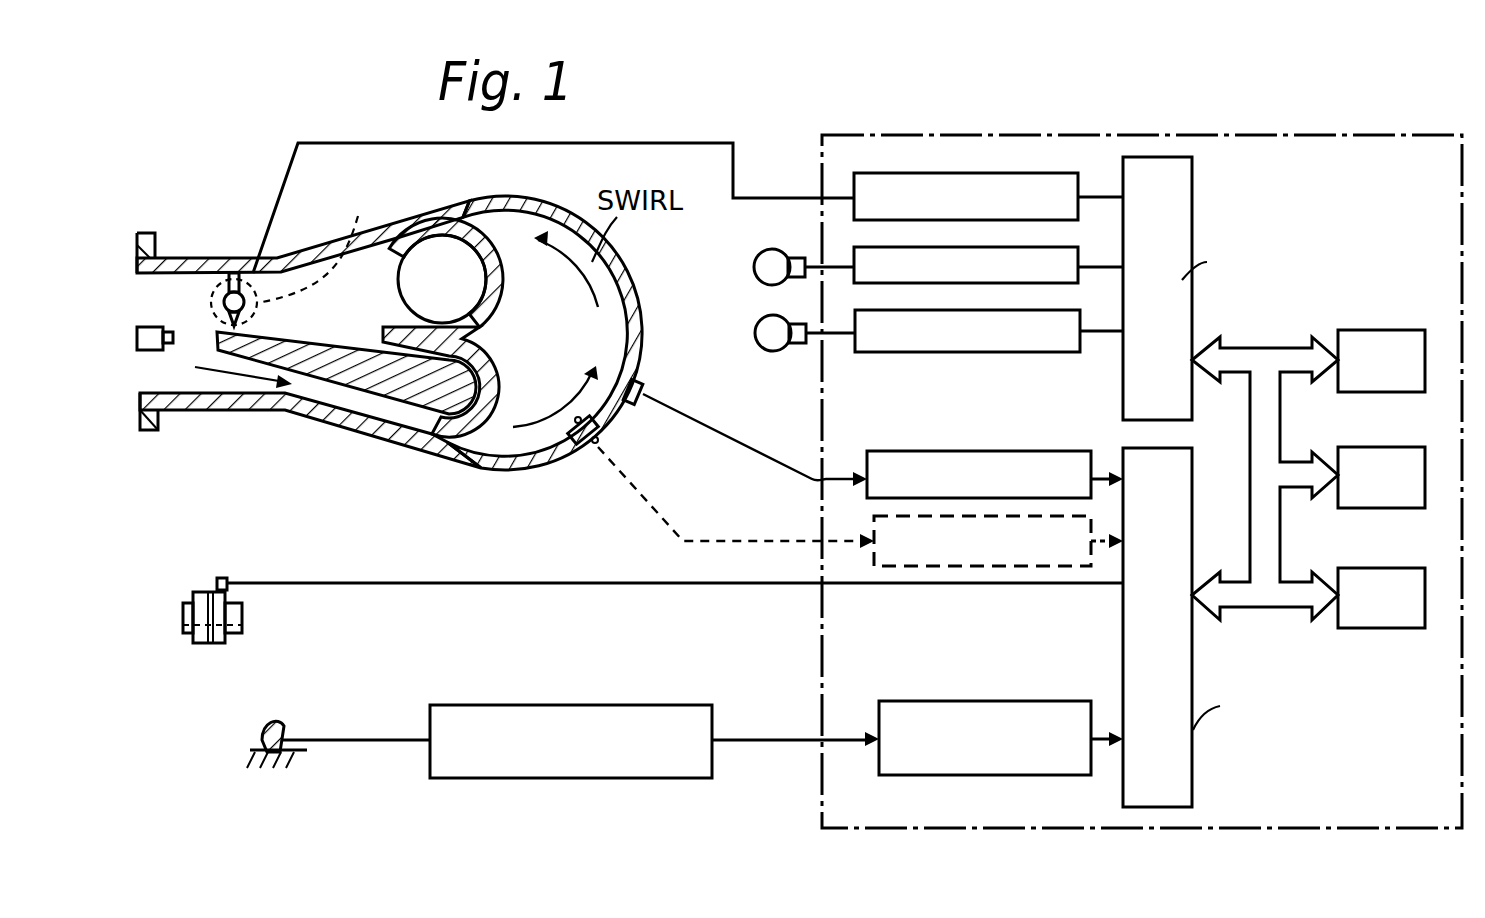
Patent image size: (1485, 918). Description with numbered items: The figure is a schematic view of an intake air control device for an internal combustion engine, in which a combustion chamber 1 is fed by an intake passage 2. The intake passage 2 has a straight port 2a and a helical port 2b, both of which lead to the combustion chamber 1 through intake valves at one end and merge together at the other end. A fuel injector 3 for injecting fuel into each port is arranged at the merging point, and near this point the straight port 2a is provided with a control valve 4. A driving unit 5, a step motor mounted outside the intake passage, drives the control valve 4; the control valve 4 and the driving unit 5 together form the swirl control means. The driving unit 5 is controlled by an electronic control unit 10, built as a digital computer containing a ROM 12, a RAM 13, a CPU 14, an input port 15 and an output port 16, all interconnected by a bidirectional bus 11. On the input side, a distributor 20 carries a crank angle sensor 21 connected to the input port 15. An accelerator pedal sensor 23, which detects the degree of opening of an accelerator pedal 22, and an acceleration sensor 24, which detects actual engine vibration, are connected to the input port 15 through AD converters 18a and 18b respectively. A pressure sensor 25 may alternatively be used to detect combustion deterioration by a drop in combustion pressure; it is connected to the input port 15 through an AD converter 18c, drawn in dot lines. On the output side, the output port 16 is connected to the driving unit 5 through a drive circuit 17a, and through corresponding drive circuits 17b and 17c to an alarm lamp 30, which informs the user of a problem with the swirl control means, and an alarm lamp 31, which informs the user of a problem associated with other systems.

The combustion chamber 1 is at (603, 343).
The intake passage 2 is at (205, 430).
The straight port 2a is at (290, 282).
The helical port 2b is at (305, 410).
The fuel injector 3 is at (150, 325).
The control valve 4 is at (236, 272).
The driving unit 5 is at (318, 244).
The electronic control unit 10 is at (1242, 132).
The bidirectional bus 11 is at (1282, 342).
The ROM 12 is at (1365, 332).
The RAM 13 is at (1362, 447).
The CPU 14 is at (1402, 568).
The input port 15 is at (1193, 776).
The output port 16 is at (1195, 232).
The drive circuit 17a is at (1020, 173).
The drive circuit 17b is at (857, 273).
The drive circuit 17c is at (884, 353).
The AD converter 18a is at (968, 701).
The AD converter 18b is at (1033, 451).
The AD converter 18c is at (1067, 566).
The distributor 20 is at (212, 645).
The crank angle sensor 21 is at (224, 578).
The accelerator pedal 22 is at (290, 730).
The accelerator pedal sensor 23 is at (584, 705).
The acceleration sensor 24 is at (648, 391).
The pressure sensor 25 is at (602, 433).
The alarm lamp 30 is at (768, 250).
The alarm lamp 31 is at (765, 350).